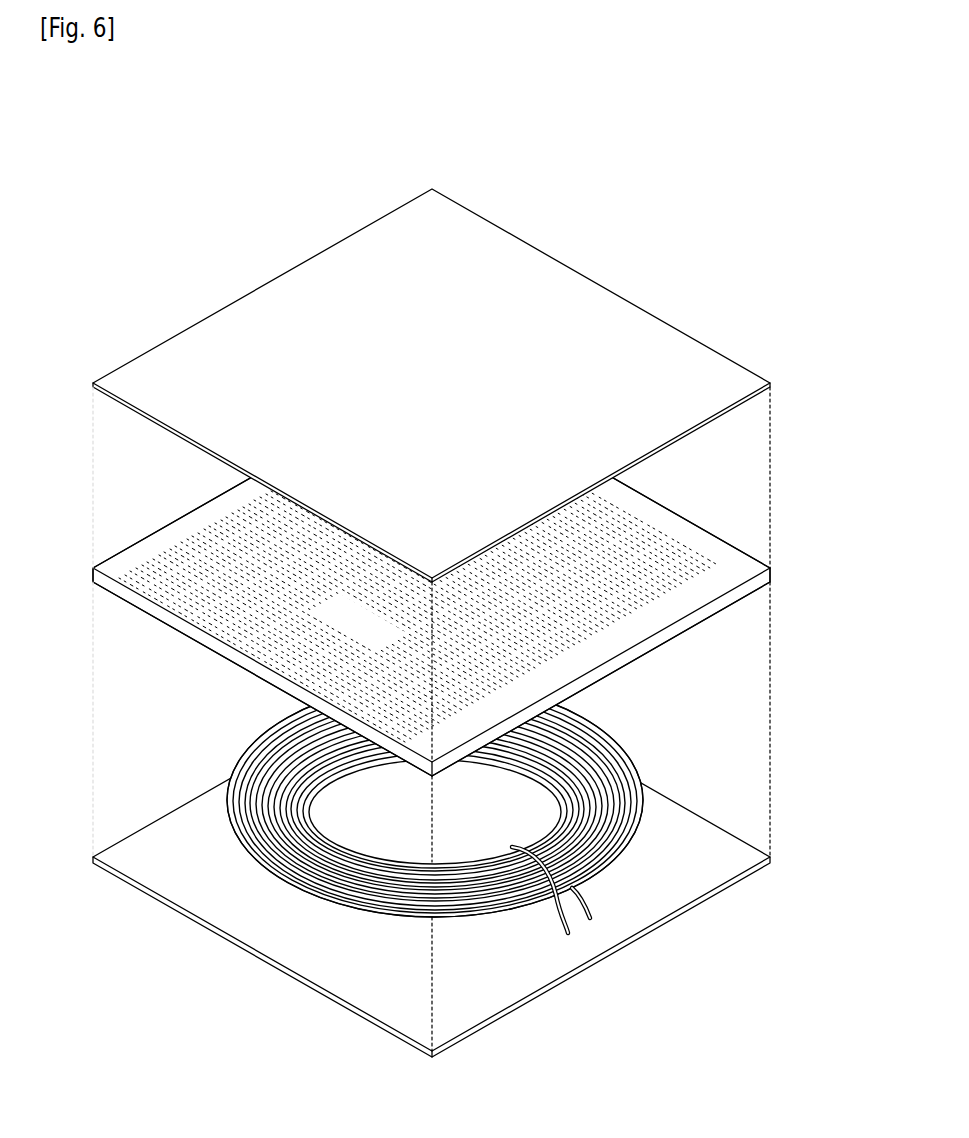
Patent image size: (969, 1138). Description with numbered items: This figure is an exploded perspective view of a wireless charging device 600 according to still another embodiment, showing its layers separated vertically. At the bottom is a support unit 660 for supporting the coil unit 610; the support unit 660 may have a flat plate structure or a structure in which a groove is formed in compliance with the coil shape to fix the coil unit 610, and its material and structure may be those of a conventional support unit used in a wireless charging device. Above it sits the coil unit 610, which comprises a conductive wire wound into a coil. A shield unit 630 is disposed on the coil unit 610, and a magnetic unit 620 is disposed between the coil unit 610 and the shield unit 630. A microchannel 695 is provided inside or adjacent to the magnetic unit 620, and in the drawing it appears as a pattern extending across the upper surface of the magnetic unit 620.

The wireless charging device 600 is at (452, 116).
The coil unit 610 is at (620, 742).
The magnetic unit 620 is at (470, 575).
The shield unit 630 is at (735, 369).
The support unit 660 is at (733, 845).
The microchannel 695 is at (650, 520).